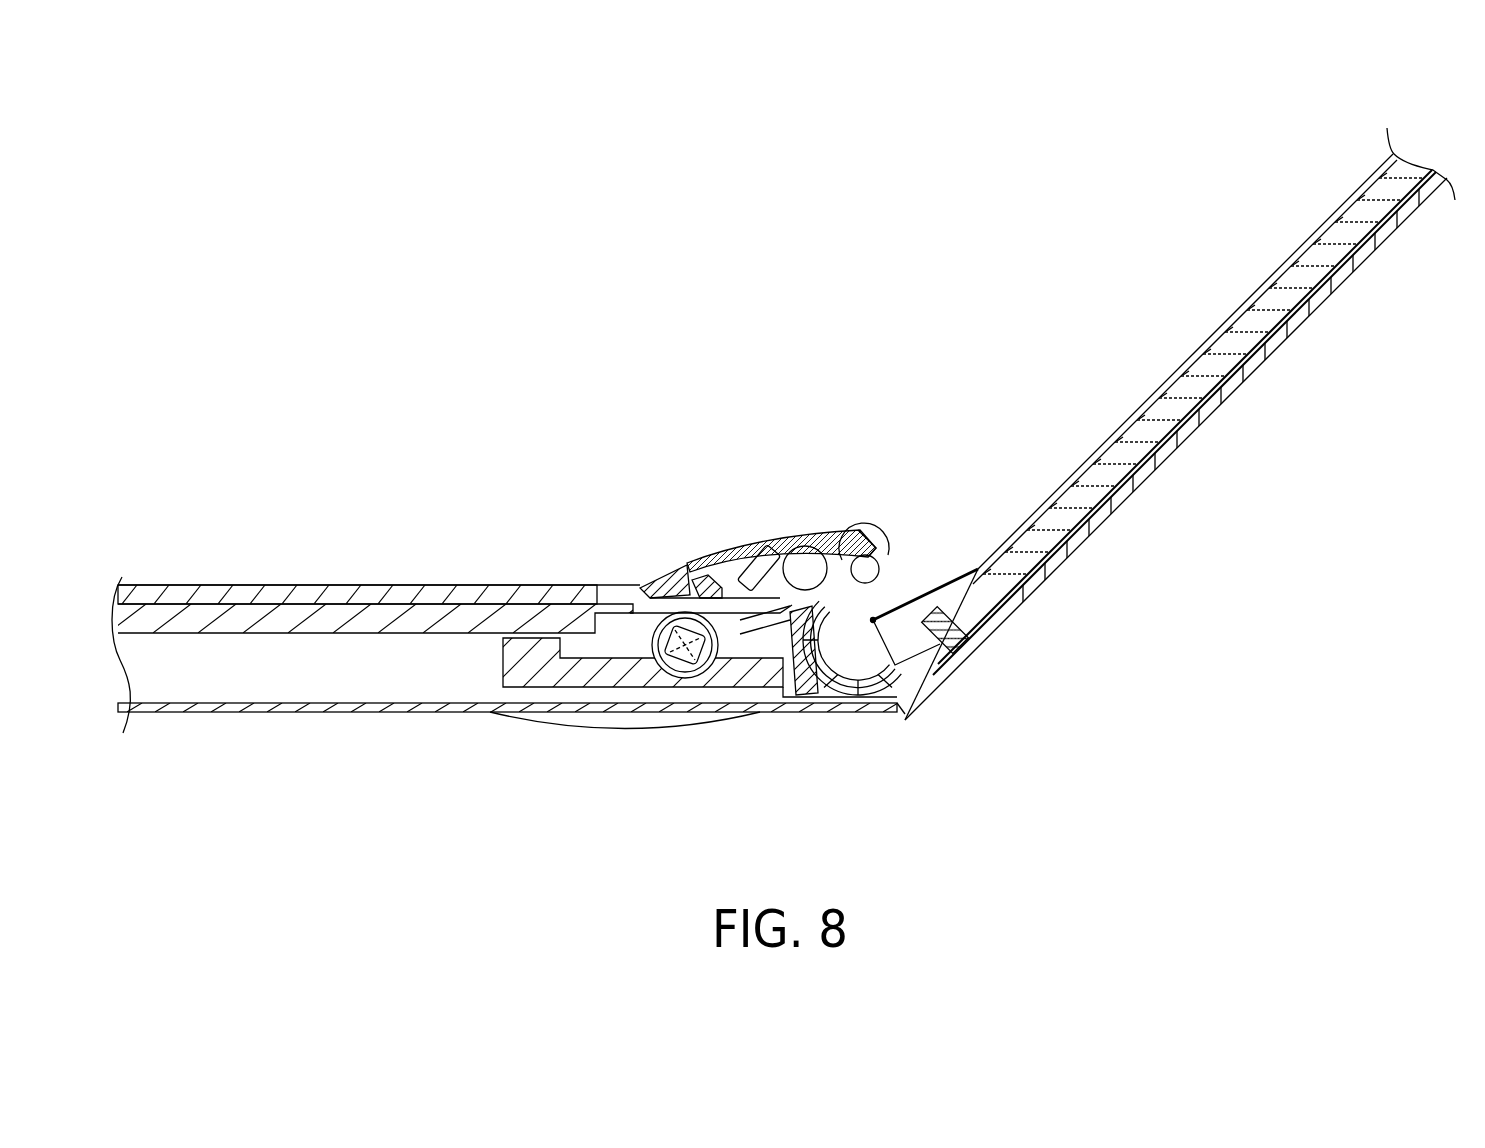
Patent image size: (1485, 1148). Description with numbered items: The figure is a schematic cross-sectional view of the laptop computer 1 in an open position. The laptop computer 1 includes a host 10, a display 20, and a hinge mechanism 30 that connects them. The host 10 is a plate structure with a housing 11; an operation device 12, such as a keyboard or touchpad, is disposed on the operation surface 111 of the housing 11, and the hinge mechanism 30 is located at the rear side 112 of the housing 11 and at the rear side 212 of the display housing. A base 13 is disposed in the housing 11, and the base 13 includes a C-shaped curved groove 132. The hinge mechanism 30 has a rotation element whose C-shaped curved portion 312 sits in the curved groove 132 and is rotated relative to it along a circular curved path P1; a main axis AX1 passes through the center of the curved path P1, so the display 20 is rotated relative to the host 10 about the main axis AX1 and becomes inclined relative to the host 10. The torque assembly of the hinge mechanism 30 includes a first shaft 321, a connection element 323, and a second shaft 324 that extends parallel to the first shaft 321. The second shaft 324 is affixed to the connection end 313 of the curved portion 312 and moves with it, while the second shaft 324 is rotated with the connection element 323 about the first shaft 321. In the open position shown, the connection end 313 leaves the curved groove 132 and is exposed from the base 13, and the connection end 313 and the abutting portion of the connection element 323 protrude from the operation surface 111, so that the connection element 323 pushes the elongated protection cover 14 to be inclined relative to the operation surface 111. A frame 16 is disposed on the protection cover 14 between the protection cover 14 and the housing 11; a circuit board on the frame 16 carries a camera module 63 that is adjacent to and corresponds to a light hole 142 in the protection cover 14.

The laptop computer 1 is at (131, 84).
The host 10 is at (530, 653).
The housing 11 is at (281, 712).
The operation device 12 is at (302, 592).
The operation surface 111 is at (353, 590).
The rear side 112 is at (910, 693).
The base 13 is at (800, 690).
The curved groove 132 is at (865, 693).
The protection cover 14 is at (690, 580).
The light hole 142 is at (752, 548).
The frame 16 is at (668, 565).
The display 20 is at (1180, 424).
The rear side 212 is at (930, 672).
The hinge mechanism 30 is at (916, 599).
The curved portion 312 is at (952, 616).
The connection end 313 is at (905, 560).
The first shaft 321 is at (705, 555).
The connection element 323 is at (806, 545).
The second shaft 324 is at (863, 530).
The camera module 63 is at (760, 548).
The curved path P1 is at (880, 565).
The main axis AX1 is at (900, 615).